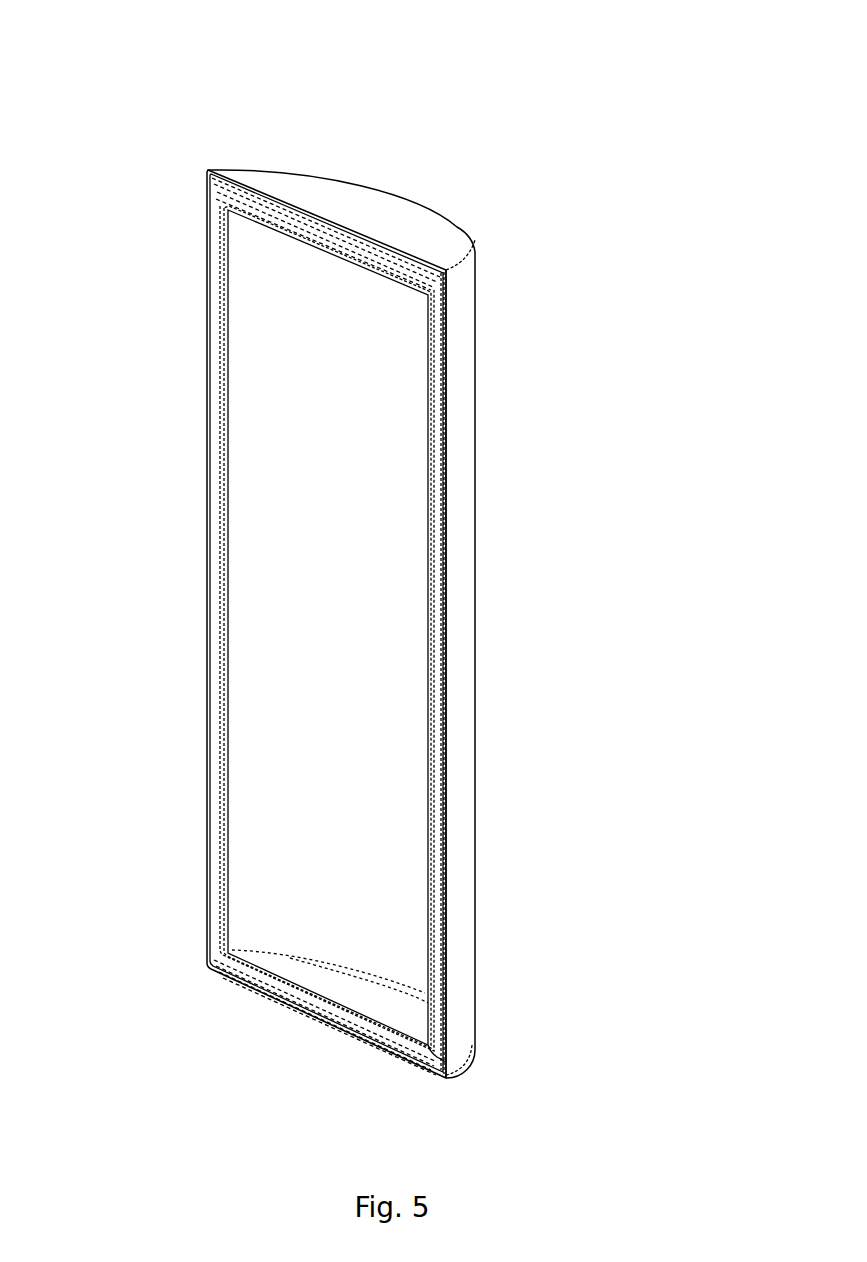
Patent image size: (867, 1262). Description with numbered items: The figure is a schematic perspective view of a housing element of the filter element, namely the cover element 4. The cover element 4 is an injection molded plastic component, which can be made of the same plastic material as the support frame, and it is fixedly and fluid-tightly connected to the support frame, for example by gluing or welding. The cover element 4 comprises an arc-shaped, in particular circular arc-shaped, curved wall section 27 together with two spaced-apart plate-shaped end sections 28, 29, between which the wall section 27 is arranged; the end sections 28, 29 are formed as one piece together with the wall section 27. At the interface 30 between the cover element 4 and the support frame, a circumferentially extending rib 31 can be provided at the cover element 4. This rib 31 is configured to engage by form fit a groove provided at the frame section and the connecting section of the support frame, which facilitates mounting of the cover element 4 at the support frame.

The cover element 4 is at (362, 118).
The wall section 27 is at (300, 653).
The end section 28 is at (357, 983).
The end section 29 is at (408, 218).
The interface 30 is at (448, 975).
The rib 31 is at (423, 1057).